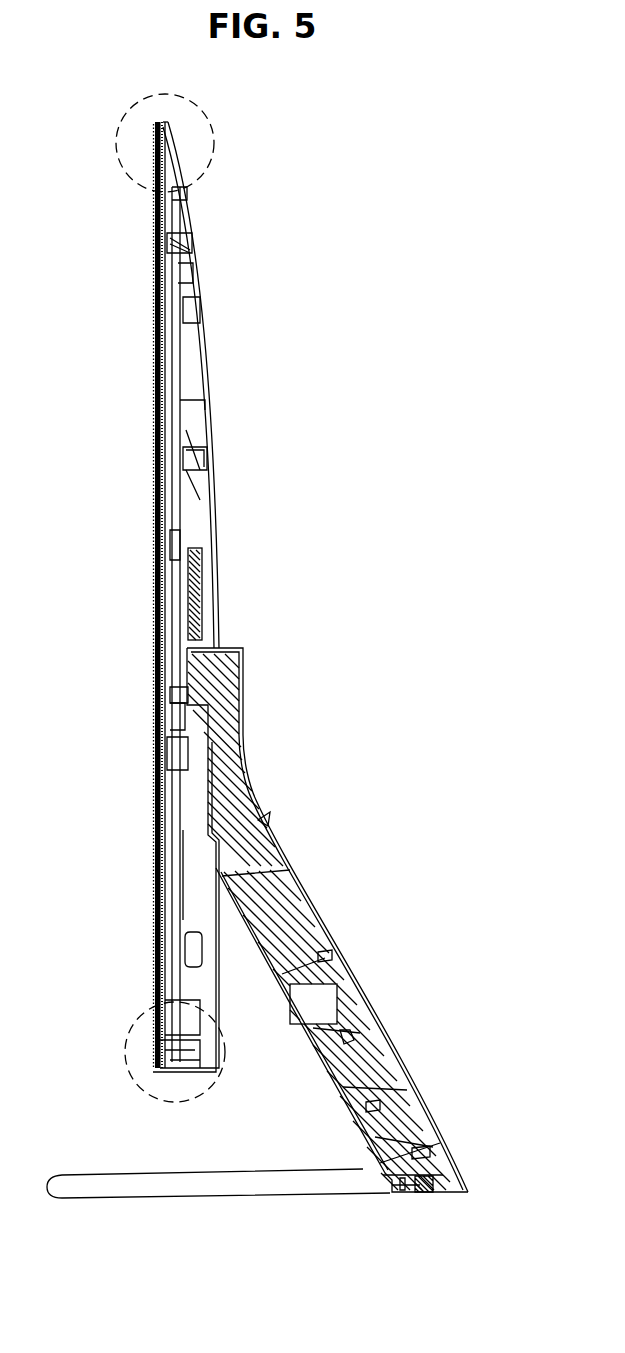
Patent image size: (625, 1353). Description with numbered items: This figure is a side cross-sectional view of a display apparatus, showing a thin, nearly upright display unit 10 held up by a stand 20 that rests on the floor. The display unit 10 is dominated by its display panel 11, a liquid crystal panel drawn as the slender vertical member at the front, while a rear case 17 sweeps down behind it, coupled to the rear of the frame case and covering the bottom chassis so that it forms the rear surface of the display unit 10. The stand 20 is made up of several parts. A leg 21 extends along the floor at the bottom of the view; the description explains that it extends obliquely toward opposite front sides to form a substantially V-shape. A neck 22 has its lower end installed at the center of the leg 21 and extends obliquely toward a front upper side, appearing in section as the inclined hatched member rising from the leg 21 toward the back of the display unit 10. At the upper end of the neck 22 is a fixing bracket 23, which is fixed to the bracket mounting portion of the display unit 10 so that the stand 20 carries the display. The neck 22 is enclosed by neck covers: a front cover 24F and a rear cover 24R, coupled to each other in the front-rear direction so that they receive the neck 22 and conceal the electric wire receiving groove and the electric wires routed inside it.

The display unit 10 is at (177, 595).
The display panel 11 is at (155, 542).
The rear case 17 is at (212, 517).
The stand 20 is at (310, 920).
The leg 21 is at (221, 1190).
The neck 22 is at (347, 1077).
The fixing bracket 23 is at (193, 568).
The front cover 24F is at (290, 995).
The rear cover 24R is at (330, 893).